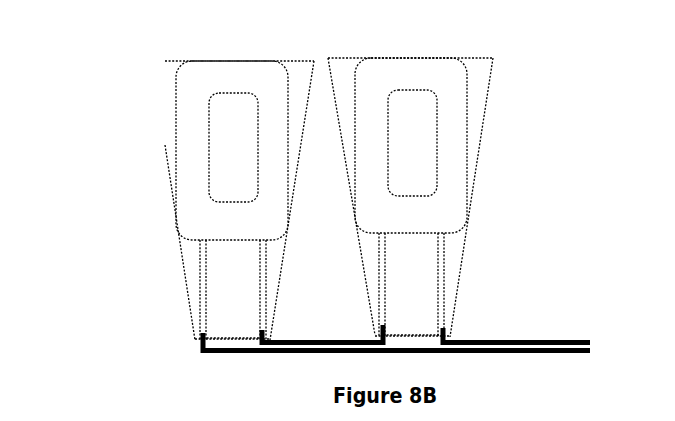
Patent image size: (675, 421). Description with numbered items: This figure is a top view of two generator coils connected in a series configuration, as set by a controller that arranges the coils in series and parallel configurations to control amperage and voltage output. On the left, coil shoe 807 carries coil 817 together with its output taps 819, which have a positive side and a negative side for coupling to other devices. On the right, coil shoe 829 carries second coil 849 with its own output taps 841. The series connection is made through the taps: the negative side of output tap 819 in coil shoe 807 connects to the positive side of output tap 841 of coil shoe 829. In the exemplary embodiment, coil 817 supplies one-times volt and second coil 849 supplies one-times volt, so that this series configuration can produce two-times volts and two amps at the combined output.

The coil shoe 807 is at (167, 163).
The coil 817 is at (202, 73).
The output taps 819 is at (202, 298).
The coil shoe 829 is at (487, 100).
The second coil 849 is at (452, 174).
The output taps 841 is at (438, 290).